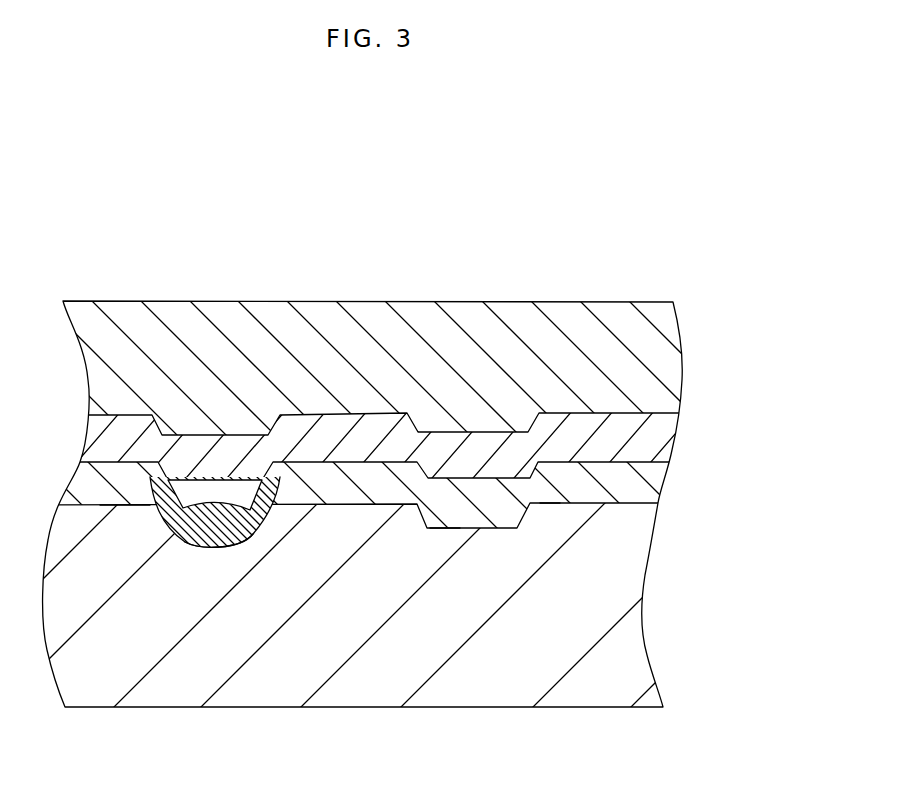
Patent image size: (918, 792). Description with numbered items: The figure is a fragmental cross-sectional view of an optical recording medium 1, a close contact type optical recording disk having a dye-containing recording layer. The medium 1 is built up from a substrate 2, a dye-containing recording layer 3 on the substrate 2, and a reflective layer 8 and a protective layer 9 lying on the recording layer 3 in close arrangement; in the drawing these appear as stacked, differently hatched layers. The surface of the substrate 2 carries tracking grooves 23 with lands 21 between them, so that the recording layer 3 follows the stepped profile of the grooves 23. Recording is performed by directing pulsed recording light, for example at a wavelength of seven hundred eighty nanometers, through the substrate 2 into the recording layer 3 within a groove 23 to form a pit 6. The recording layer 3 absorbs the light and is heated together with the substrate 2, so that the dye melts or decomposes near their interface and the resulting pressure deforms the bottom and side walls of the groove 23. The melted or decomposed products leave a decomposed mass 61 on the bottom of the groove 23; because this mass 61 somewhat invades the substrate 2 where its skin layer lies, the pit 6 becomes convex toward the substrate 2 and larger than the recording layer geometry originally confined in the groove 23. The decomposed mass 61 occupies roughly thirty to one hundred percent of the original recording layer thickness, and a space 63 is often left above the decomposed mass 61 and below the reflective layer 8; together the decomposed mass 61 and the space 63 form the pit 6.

The optical recording medium 1 is at (438, 284).
The substrate 2 is at (630, 637).
The dye-containing recording layer 3 is at (648, 485).
The pit 6 is at (272, 520).
The reflective layer 8 is at (662, 430).
The protective layer 9 is at (678, 368).
The substrate surface portion 21 is at (132, 507).
The tracking groove 23 is at (185, 535).
The decomposed mass 61 is at (219, 535).
The space 63 is at (245, 492).